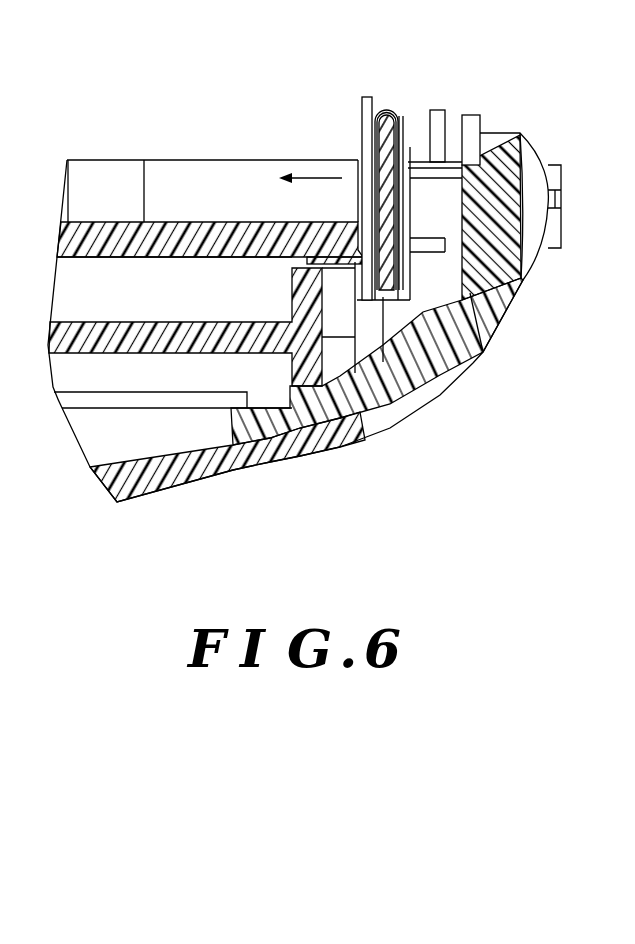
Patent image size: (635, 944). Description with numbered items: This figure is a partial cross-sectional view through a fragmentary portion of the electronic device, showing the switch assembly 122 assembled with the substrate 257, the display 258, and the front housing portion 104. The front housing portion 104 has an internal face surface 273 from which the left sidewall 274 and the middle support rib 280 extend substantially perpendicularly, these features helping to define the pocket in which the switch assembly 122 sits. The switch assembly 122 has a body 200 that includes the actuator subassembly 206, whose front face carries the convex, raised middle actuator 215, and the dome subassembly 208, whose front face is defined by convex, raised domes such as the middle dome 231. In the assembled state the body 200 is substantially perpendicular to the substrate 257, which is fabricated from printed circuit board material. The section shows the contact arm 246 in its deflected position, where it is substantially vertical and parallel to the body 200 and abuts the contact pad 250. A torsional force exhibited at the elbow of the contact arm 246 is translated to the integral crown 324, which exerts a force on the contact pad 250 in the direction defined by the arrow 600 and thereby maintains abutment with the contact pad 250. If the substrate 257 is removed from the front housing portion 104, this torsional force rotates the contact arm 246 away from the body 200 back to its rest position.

The front housing portion 104 is at (461, 410).
The switch assembly 122 is at (554, 103).
The body 200 is at (404, 155).
The actuator subassembly 206 is at (395, 137).
The dome subassembly 208 is at (387, 143).
The middle actuator 215 is at (556, 178).
The middle dome 231 is at (445, 312).
The contact arm 246 is at (377, 120).
The contact pad 250 is at (340, 258).
The substrate 257 is at (191, 206).
The display 258 is at (290, 373).
The internal face surface 273 is at (157, 466).
The left sidewall 274 is at (470, 296).
The middle support rib 280 is at (368, 96).
The crown 324 is at (363, 260).
The arrow 600 is at (307, 176).